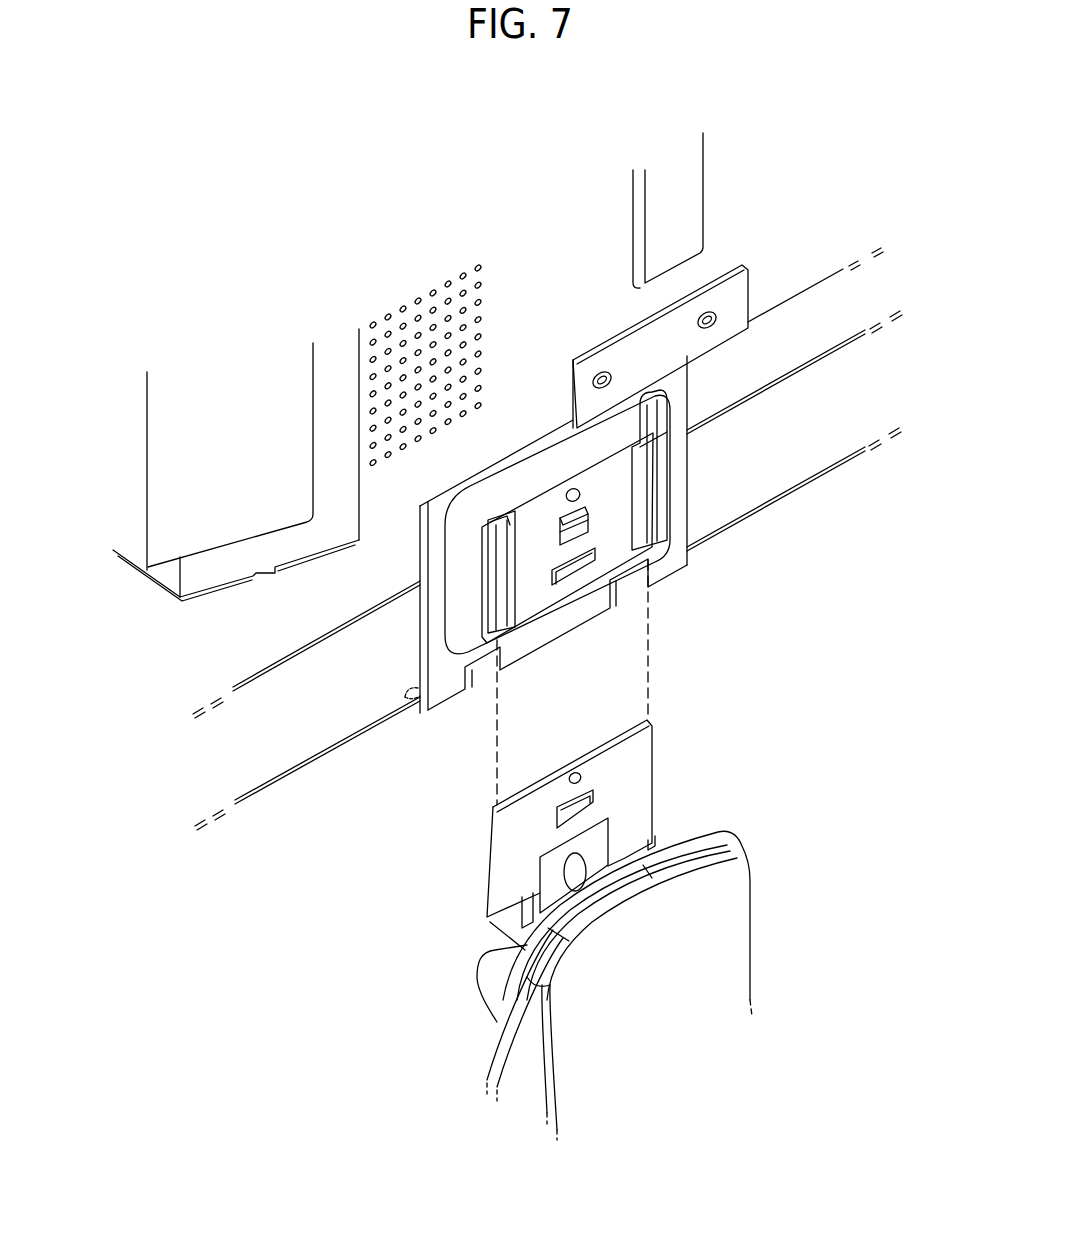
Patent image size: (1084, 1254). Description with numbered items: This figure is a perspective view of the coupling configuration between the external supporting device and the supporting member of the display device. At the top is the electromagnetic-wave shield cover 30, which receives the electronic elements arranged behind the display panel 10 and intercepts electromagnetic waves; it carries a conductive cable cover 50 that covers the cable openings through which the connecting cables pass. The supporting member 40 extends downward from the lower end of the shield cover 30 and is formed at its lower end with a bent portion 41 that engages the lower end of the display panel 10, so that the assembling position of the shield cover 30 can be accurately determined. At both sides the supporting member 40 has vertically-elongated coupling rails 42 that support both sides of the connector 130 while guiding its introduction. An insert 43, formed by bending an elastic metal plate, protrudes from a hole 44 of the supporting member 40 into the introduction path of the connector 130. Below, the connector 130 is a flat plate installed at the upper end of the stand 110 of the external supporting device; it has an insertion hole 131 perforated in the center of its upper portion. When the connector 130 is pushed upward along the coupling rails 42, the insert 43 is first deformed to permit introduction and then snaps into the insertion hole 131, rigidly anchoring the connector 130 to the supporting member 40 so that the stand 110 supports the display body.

The display panel 10 is at (779, 476).
The electromagnetic-wave shield cover 30 is at (763, 290).
The supporting member 40 is at (440, 693).
The bent portion 41 is at (410, 692).
The coupling rails 42 is at (670, 560).
The insert 43 is at (588, 537).
The hole 44 is at (570, 578).
The cable cover 50 is at (157, 500).
The stand 110 is at (735, 945).
The connector 130 is at (649, 782).
The insertion hole 131 is at (587, 752).